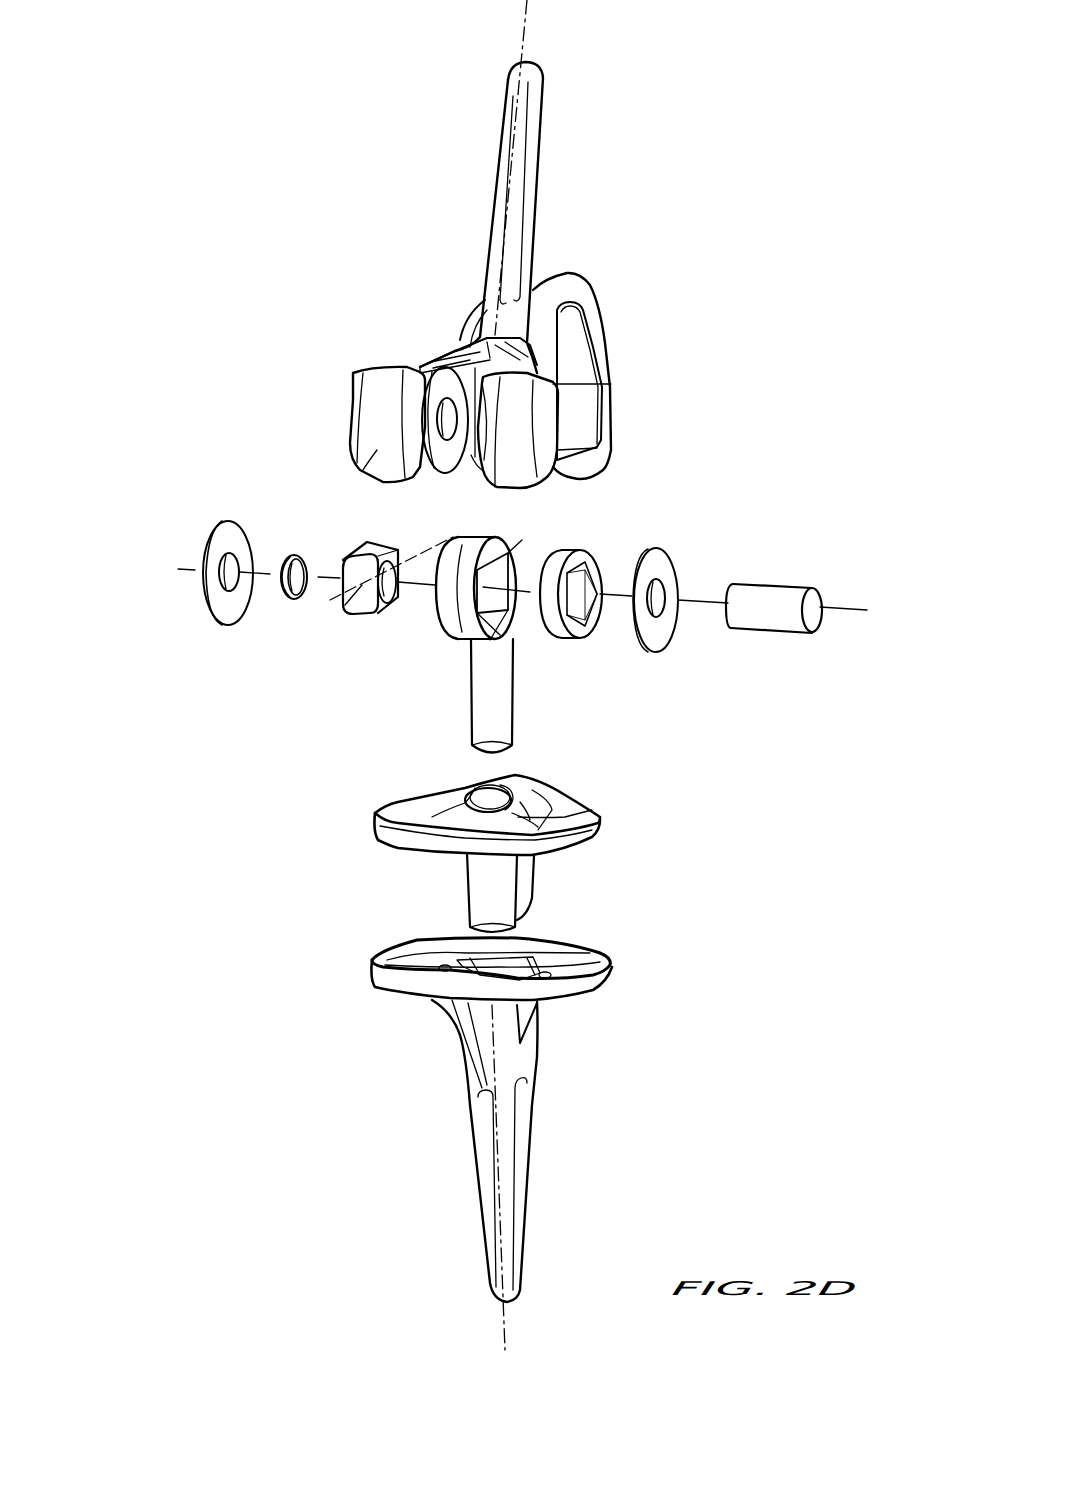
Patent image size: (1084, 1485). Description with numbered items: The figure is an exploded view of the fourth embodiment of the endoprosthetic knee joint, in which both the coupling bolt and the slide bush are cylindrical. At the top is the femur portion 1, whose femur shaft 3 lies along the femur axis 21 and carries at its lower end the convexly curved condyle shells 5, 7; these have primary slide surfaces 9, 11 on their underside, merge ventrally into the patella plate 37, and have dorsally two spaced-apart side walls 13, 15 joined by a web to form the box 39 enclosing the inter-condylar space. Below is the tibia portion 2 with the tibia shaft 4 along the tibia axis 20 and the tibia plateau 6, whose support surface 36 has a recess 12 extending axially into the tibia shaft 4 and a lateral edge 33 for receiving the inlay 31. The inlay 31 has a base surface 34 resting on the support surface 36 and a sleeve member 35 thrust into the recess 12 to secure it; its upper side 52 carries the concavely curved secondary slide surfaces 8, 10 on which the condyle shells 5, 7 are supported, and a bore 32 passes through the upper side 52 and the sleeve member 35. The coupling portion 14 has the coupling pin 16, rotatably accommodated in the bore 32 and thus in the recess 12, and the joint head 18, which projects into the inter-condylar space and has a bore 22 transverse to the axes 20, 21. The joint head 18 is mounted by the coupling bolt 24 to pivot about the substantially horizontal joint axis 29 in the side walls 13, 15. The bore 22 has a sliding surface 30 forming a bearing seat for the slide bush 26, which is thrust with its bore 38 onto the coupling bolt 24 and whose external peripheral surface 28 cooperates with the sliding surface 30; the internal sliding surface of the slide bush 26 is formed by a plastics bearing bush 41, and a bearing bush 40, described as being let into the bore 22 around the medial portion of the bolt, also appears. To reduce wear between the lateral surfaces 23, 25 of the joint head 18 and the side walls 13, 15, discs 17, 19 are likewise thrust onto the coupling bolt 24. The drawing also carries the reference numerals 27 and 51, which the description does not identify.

The femur portion 1 is at (338, 152).
The tibia portion 2 is at (292, 1130).
The femur shaft 3 is at (540, 152).
The tibia shaft 4 is at (522, 1125).
The condyle shell 5 is at (356, 410).
The tibia plateau 6 is at (585, 985).
The condyle shell 7 is at (592, 472).
The secondary slide surface 8 is at (398, 818).
The primary slide surface 9 is at (375, 466).
The secondary slide surface 10 is at (575, 812).
The primary slide surface 11 is at (523, 465).
The recess 12 is at (500, 945).
The side wall 13 is at (447, 453).
The coupling portion 14 is at (228, 708).
The side wall 15 is at (483, 472).
The coupling pin 16 is at (495, 690).
The disc 17 is at (213, 605).
The joint head 18 is at (463, 632).
The disc 19 is at (660, 562).
The tibia axis 20 is at (503, 1335).
The femur axis 21 is at (528, 25).
The bore 22 is at (498, 570).
The lateral surface 23 is at (428, 630).
The coupling bolt 24 is at (770, 590).
The lateral surface 25 is at (505, 650).
The slide bush 26 is at (360, 606).
The nut axis 27 is at (420, 550).
The external peripheral surface 28 is at (355, 551).
The joint axis 29 is at (845, 606).
The sliding surface 30 is at (493, 630).
The inlay 31 is at (255, 885).
The bore 32 is at (484, 792).
The lateral edge 33 is at (395, 957).
The base surface 34 is at (410, 852).
The sleeve member 35 is at (527, 878).
The support surface 36 is at (565, 970).
The patella plate 37 is at (598, 312).
The bore 38 is at (394, 592).
The box 39 is at (462, 350).
The bearing bush 40 is at (567, 558).
The bearing bush 41 is at (290, 555).
The boss rim 51 is at (508, 790).
The upper side 52 is at (525, 795).